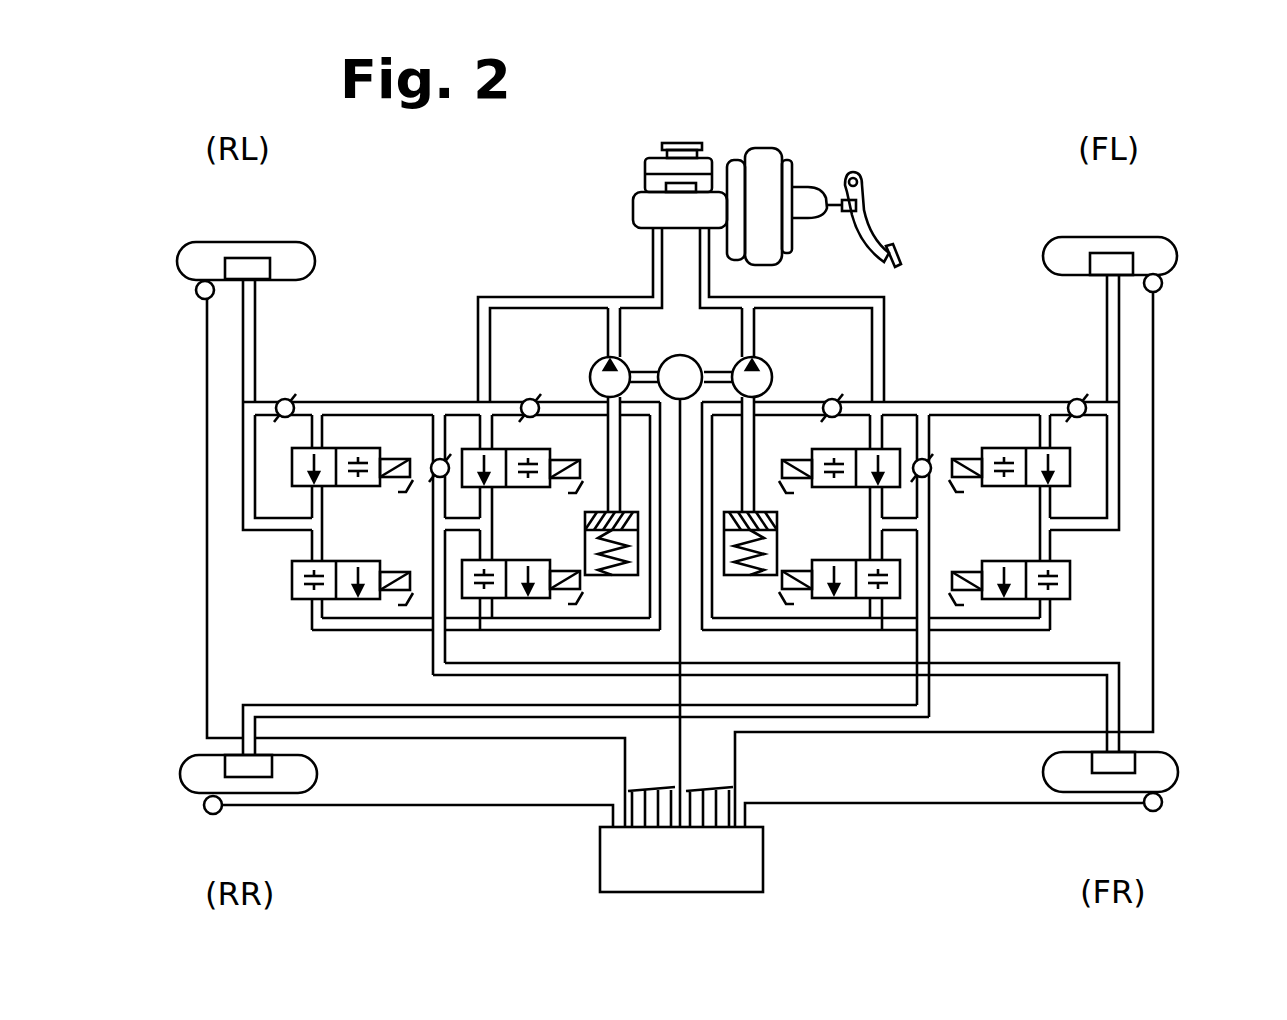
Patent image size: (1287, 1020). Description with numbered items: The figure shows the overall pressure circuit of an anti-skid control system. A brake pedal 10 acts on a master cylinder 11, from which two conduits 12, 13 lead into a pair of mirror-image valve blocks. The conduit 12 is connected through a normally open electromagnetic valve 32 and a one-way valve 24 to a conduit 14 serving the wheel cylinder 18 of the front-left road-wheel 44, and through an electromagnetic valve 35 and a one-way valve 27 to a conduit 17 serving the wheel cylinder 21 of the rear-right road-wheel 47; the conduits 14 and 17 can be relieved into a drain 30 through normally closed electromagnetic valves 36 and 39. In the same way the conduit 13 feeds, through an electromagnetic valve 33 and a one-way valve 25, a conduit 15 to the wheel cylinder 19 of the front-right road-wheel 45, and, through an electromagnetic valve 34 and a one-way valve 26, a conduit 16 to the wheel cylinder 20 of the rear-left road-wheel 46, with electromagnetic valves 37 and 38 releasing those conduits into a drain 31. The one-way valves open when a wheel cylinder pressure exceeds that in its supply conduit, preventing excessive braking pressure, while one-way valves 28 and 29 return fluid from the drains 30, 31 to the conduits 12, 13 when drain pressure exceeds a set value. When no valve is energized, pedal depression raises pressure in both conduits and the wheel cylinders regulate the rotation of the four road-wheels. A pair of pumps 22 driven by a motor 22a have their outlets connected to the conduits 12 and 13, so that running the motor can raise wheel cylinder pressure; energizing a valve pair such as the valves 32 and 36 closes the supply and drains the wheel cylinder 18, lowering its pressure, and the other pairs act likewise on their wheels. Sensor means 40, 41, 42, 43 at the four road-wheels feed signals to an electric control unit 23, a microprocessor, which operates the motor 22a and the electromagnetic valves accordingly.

The brake pedal 10 is at (870, 228).
The master cylinder 11 is at (776, 157).
The conduit 12 is at (888, 320).
The conduit 13 is at (537, 297).
The conduit 14 is at (1105, 305).
The conduit 15 is at (1046, 677).
The conduit 16 is at (257, 326).
The conduit 17 is at (280, 705).
The wheel cylinder 18 is at (1112, 253).
The wheel cylinder 19 is at (1108, 774).
The wheel cylinder 20 is at (246, 258).
The wheel cylinder 21 is at (250, 778).
The pump 22 is at (596, 363).
The motor 22a is at (678, 355).
The electric control unit 23 is at (764, 858).
The one-way valve 24 is at (1070, 400).
The one-way valve 25 is at (433, 461).
The one-way valve 26 is at (294, 400).
The one-way valve 27 is at (930, 461).
The one-way valve 28 is at (838, 398).
The one-way valve 29 is at (526, 398).
The drain 30 is at (778, 552).
The drain 31 is at (585, 552).
The electromagnetic valve 32 is at (1008, 488).
The electromagnetic valve 33 is at (548, 450).
The electromagnetic valve 34 is at (352, 488).
The electromagnetic valve 35 is at (830, 450).
The electromagnetic valve 36 is at (1072, 583).
The electromagnetic valve 37 is at (500, 560).
The electromagnetic valve 38 is at (290, 583).
The electromagnetic valve 39 is at (850, 560).
The sensor means 40 is at (1162, 292).
The sensor means 41 is at (1162, 811).
The sensor means 42 is at (198, 300).
The sensor means 43 is at (206, 813).
The front-left road-wheel 44 is at (1173, 243).
The front-right road-wheel 45 is at (1172, 756).
The rear-left road-wheel 46 is at (310, 247).
The rear-right road-wheel 47 is at (318, 775).